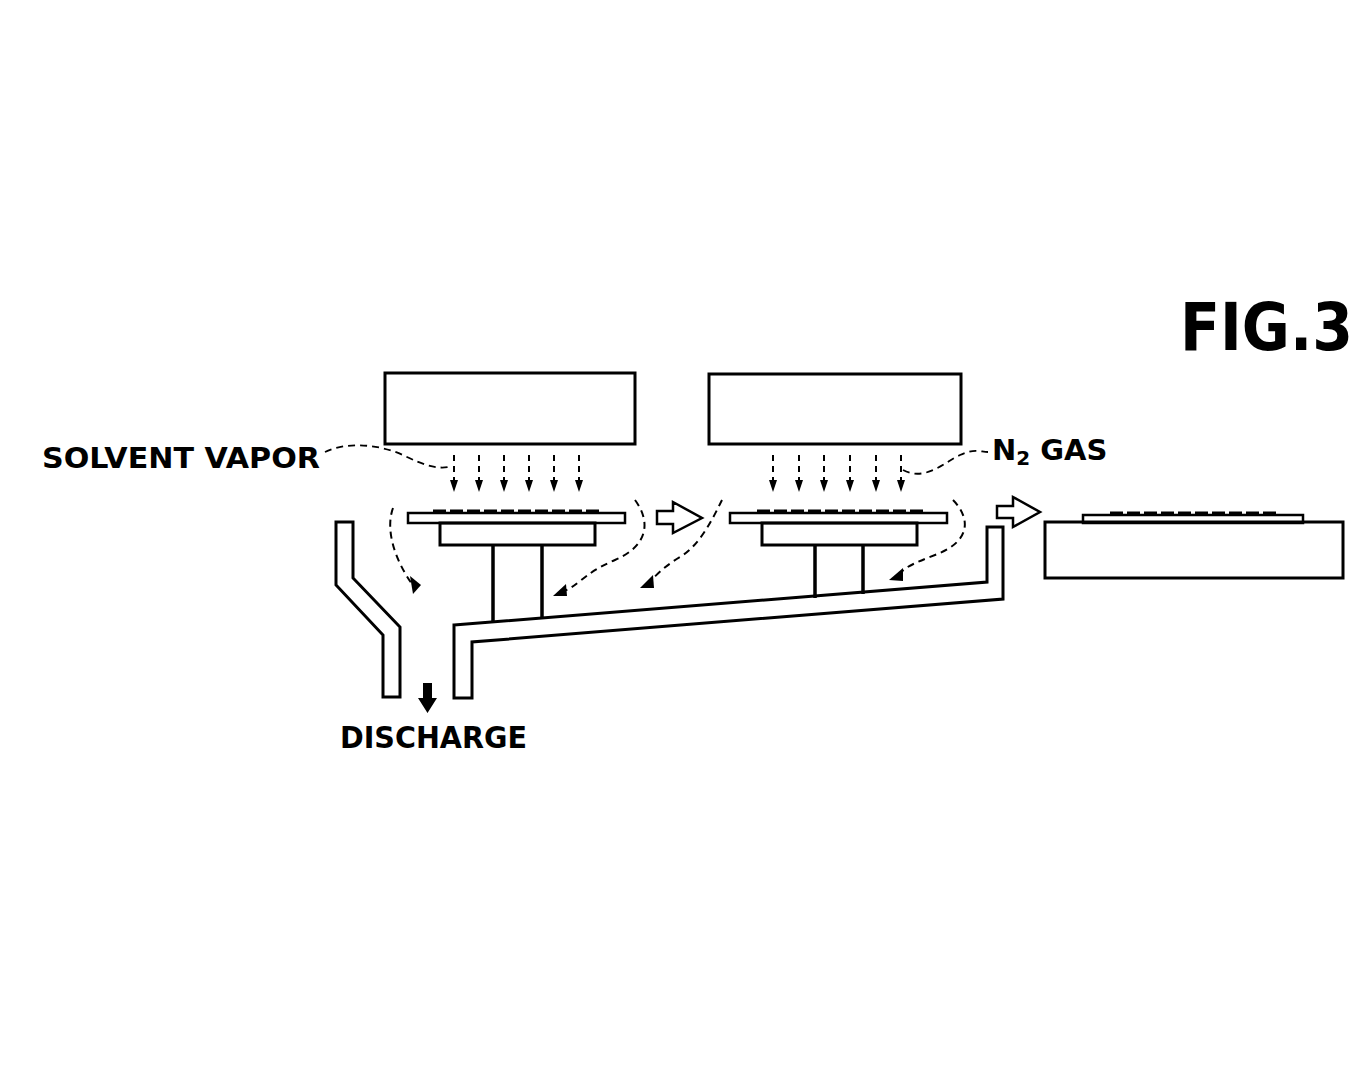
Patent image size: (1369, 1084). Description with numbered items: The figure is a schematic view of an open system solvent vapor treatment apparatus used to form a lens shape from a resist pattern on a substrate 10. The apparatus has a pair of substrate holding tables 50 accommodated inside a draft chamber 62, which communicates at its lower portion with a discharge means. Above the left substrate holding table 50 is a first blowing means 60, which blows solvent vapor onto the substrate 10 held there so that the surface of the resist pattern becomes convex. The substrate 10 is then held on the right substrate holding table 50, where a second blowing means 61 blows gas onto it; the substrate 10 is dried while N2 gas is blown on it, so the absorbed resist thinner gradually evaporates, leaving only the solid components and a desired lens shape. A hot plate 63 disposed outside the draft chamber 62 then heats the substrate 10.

The substrate 10 is at (607, 516).
The substrate holding table 50 is at (560, 546).
The first blowing means 60 is at (592, 383).
The second blowing means 61 is at (933, 383).
The draft chamber 62 is at (683, 619).
The hot plate 63 is at (1242, 572).